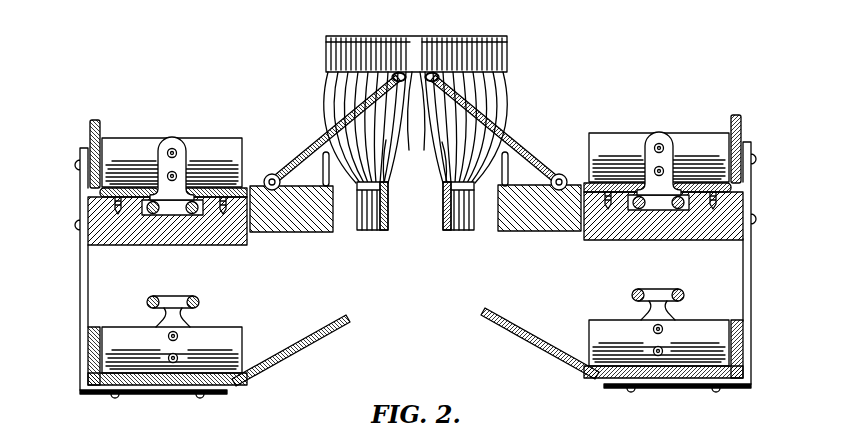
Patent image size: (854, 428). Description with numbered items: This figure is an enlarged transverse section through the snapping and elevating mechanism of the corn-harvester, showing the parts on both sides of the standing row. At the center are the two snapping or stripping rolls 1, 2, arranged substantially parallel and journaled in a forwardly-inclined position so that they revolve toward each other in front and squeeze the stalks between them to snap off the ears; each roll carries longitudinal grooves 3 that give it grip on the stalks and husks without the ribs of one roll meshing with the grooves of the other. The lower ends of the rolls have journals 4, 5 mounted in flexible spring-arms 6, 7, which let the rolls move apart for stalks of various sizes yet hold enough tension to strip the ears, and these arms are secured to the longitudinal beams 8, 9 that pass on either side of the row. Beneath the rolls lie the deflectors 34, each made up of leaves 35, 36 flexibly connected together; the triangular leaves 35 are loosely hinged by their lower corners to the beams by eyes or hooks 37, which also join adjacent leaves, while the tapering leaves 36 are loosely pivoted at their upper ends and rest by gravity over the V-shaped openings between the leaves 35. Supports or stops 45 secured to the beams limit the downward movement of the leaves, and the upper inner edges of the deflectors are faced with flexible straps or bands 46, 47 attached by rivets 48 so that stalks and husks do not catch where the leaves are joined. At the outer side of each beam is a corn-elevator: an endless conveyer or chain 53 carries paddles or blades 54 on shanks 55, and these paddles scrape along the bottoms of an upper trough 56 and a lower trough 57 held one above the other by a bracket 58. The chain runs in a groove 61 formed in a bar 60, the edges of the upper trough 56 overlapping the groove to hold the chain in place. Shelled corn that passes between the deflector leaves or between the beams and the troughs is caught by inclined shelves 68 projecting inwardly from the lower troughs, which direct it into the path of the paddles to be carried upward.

The snapping or stripping roll 1 is at (458, 40).
The snapping or stripping roll 2 is at (337, 62).
The longitudinal grooves 3 is at (352, 60).
The journal 4 is at (458, 226).
The journal 5 is at (376, 226).
The spring-arm 6 is at (443, 213).
The spring-arm 7 is at (388, 214).
The longitudinal beam 8 is at (547, 226).
The longitudinal beam 9 is at (312, 226).
The deflector 34 is at (440, 142).
The deflector-leaf 35 is at (330, 168).
The deflector-leaf 36 is at (322, 142).
The eyes or hooks 37 is at (267, 176).
The supports or stops 45 is at (318, 158).
The strap or band 46 is at (437, 80).
The strap or band 47 is at (394, 78).
The rivets 48 is at (400, 112).
The endless conveyer or chain 53 is at (172, 218).
The paddles or blades 54 is at (226, 140).
The shanks 55 is at (170, 146).
The upper trough 56 is at (96, 120).
The lower trough 57 is at (88, 360).
The bracket 58 is at (80, 292).
The bar 60 is at (90, 208).
The groove 61 is at (210, 215).
The inclined shelf 68 is at (306, 337).